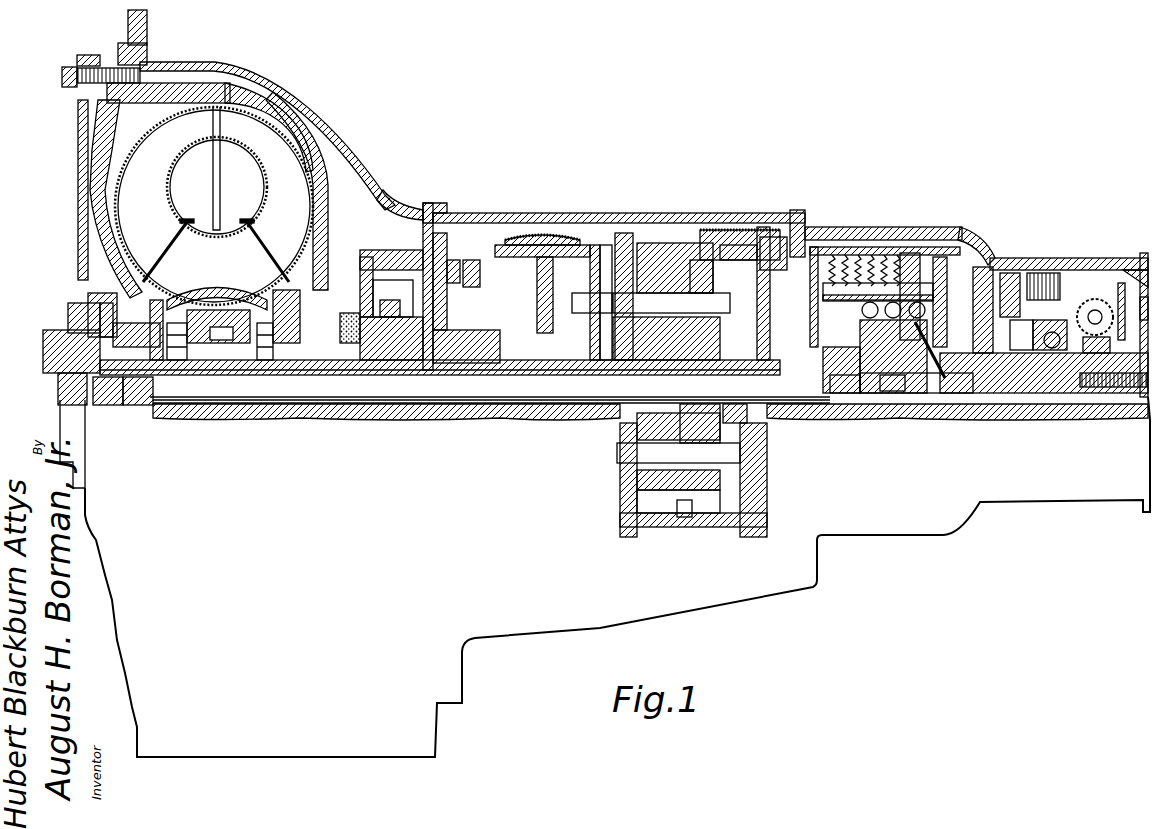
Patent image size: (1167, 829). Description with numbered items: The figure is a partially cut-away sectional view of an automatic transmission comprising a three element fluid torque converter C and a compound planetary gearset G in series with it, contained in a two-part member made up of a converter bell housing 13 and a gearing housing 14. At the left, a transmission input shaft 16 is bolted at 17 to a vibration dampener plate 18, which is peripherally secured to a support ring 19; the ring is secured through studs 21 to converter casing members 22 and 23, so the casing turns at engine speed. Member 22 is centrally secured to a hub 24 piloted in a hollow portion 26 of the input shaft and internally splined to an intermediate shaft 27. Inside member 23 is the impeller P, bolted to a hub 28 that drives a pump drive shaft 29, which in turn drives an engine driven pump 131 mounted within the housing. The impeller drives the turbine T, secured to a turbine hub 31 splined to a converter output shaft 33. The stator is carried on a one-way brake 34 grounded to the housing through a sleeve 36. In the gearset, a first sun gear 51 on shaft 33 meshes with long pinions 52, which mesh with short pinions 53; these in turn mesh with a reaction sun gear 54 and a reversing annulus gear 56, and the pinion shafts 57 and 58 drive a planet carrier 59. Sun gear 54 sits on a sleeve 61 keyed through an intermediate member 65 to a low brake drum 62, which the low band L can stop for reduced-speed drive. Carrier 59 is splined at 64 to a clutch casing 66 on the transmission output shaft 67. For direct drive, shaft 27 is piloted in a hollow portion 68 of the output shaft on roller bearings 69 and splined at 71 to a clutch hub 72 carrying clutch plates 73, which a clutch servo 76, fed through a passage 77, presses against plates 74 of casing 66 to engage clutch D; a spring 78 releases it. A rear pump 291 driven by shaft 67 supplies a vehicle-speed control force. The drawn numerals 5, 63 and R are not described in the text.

The struts 5 is at (190, 248).
The converter bell housing 13 is at (205, 62).
The gearing housing 14 is at (452, 212).
The transmission input shaft 16 is at (55, 330).
The bolted connection 17 is at (108, 300).
The vibration dampener plate 18 is at (97, 275).
The support ring 19 is at (80, 58).
The studs 21 is at (62, 77).
The converter casing member 22 is at (80, 130).
The converter casing member 23 is at (170, 82).
The hub 24 is at (135, 387).
The hollow portion 26 is at (58, 378).
The intermediate shaft 27 is at (112, 393).
The hub 28 is at (307, 375).
The pump drive shaft 29 is at (340, 375).
The turbine hub 31 is at (172, 370).
The converter output shaft 33 is at (204, 375).
The one-way brake 34 is at (217, 312).
The sleeve 36 is at (262, 370).
The first sun gear 51 is at (700, 412).
The long planetary pinions 52 is at (640, 480).
The short planet pinions 53 is at (628, 250).
The reaction sun gear 54 is at (660, 418).
The annulus or reversing gear 56 is at (660, 245).
The pinion shafts 57 is at (620, 450).
The pinion shafts 58 is at (740, 285).
The planet carrier 59 is at (780, 412).
The sleeve 61 is at (620, 374).
The low brake drum 62 is at (505, 245).
The gear 63 is at (722, 235).
The spline 64 is at (825, 375).
The intermediate member 65 is at (598, 250).
The clutch casing 66 is at (820, 262).
The transmission output shaft 67 is at (1025, 370).
The hollow portion 68 is at (920, 393).
The roller bearings 69 is at (890, 395).
The spline 71 is at (842, 395).
The clutch hub 72 is at (823, 290).
The clutch plates 73 is at (910, 258).
The clutch plates 74 is at (870, 255).
The clutch servo 76 is at (945, 270).
The passage 77 is at (945, 385).
The spring 78 is at (925, 310).
The engine driven pump 131 is at (375, 295).
The pump 291 is at (1030, 320).
The turbine member T is at (133, 194).
The converter pump or impeller P is at (298, 197).
The fluid torque converter C is at (315, 125).
The low band L is at (545, 236).
The compound planetary gearset G is at (697, 260).
The reverse gear R is at (755, 235).
The clutch D is at (860, 255).